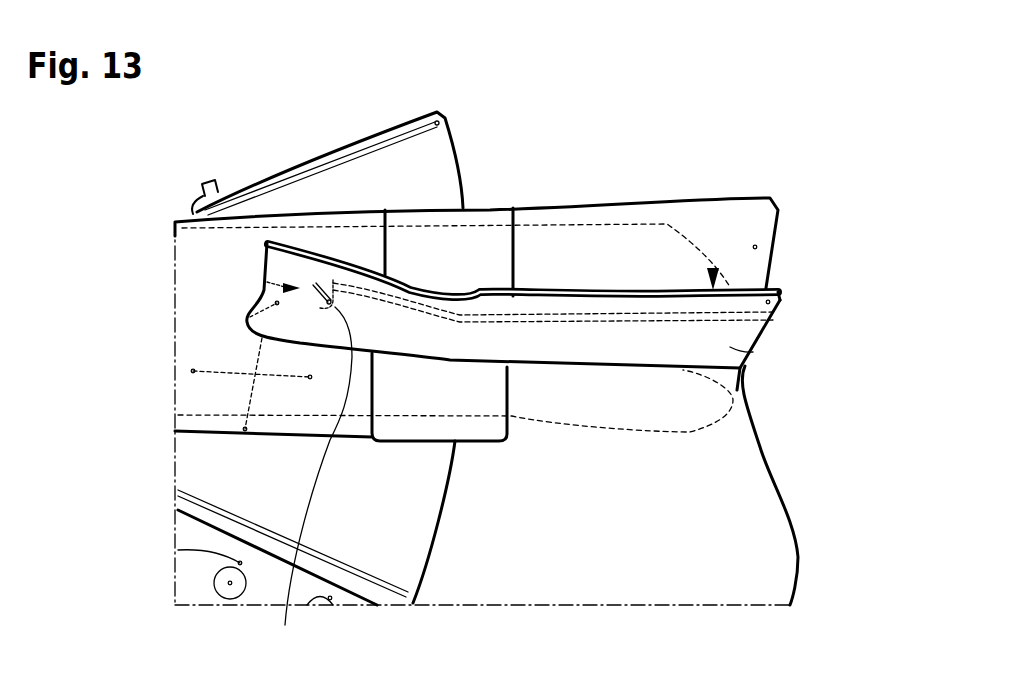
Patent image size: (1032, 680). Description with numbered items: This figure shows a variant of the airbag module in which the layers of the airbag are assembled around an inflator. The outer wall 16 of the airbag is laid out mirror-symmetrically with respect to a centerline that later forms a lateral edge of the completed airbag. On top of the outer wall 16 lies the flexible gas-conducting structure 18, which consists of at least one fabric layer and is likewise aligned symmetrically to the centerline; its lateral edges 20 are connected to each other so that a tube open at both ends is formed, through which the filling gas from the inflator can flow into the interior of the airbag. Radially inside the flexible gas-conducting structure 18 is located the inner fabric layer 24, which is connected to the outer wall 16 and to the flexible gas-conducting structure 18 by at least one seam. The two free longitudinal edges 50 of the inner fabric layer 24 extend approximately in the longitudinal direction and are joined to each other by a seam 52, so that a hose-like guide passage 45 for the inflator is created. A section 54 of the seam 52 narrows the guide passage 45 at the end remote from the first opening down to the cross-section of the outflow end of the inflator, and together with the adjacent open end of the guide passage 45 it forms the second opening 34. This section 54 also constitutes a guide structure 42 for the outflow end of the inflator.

The outer wall 16 is at (735, 480).
The flexible gas-conducting structure 18 is at (245, 203).
The lateral edges 20 is at (296, 160).
The inner fabric layer 24 is at (710, 283).
The second opening 34 is at (250, 317).
The guide structure 42 is at (267, 282).
The guide passage 45 is at (753, 352).
The free longitudinal edges 50 is at (605, 297).
The seam 52 is at (537, 317).
The section of the seam 54 is at (311, 469).